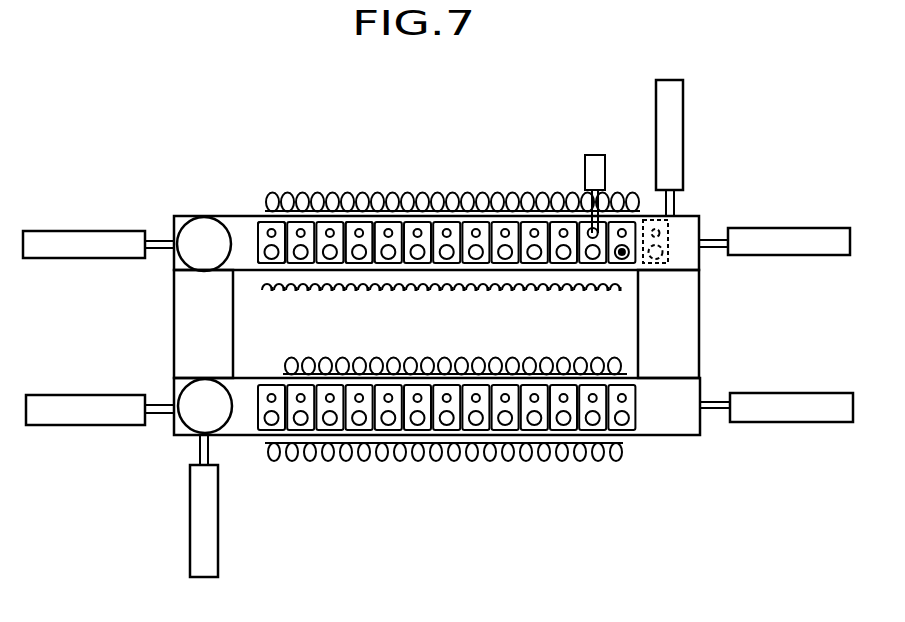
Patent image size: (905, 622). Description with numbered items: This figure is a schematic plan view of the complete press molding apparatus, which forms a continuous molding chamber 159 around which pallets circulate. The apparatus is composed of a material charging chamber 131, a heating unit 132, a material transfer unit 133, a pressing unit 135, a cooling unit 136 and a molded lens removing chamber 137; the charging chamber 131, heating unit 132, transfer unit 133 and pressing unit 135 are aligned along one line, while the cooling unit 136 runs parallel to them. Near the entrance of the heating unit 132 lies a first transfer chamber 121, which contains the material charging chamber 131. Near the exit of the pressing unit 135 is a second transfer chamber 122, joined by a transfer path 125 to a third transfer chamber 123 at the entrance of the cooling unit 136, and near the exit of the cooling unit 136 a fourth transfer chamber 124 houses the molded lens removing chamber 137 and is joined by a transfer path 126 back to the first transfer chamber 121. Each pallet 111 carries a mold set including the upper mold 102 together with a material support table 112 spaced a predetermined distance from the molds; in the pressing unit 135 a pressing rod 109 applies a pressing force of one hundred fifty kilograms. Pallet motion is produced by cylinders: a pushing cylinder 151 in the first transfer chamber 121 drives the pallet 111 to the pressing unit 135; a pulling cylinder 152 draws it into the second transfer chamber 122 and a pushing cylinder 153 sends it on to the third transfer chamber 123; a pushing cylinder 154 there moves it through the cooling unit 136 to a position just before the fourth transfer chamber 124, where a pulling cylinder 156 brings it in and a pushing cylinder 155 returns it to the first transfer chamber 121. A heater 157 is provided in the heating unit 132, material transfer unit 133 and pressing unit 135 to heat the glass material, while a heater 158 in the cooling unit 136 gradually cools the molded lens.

The upper mold 102 is at (360, 259).
The pressing rod 109 is at (621, 258).
The pallet 111 is at (275, 220).
The material support table 112 is at (358, 220).
The first transfer chamber 121 is at (175, 257).
The second transfer chamber 122 is at (695, 258).
The third transfer chamber 123 is at (673, 425).
The fourth transfer chamber 124 is at (178, 428).
The transfer path 125 is at (688, 340).
The transfer path 126 is at (177, 327).
The material charging chamber 131 is at (197, 222).
The heating unit 132 is at (390, 220).
The material transfer unit 133 is at (580, 218).
The pressing unit 135 is at (640, 207).
The cooling unit 136 is at (508, 436).
The molded lens removing chamber 137 is at (197, 420).
The pushing cylinder 151 is at (63, 250).
The pulling cylinder 152 is at (812, 254).
The pushing cylinder 153 is at (673, 132).
The pushing cylinder 154 is at (792, 412).
The pushing cylinder 155 is at (200, 517).
The pulling cylinder 156 is at (95, 400).
The heater 157 is at (407, 280).
The heater 158 is at (500, 358).
The molding chamber 159 is at (245, 217).